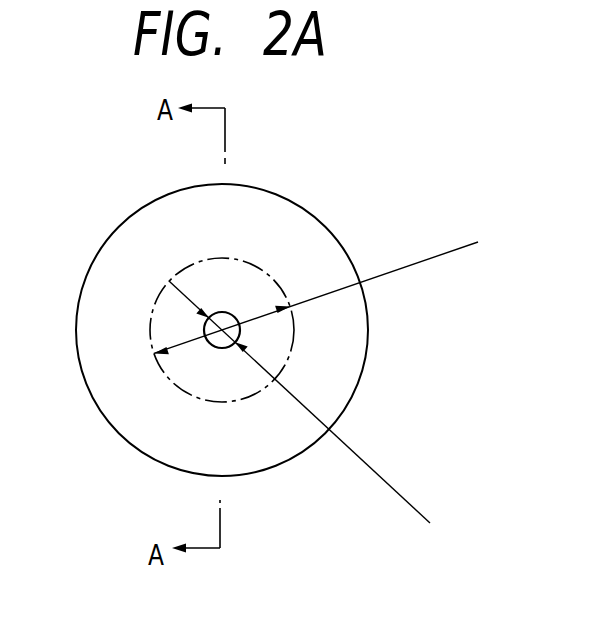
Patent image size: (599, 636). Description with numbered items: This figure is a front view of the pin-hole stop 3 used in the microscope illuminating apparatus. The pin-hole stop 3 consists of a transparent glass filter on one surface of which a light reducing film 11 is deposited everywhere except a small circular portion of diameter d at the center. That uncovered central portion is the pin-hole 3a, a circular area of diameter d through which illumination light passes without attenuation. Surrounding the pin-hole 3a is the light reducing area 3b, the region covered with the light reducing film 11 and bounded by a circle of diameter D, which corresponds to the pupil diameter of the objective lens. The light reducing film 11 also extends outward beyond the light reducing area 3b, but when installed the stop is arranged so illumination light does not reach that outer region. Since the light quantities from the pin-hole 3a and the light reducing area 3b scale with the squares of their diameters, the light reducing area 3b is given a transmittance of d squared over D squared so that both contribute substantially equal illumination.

The light reducing film 11 is at (127, 242).
The pin-hole stop 3 is at (270, 434).
The pin-hole 3a is at (213, 345).
The light reducing area 3b is at (255, 278).